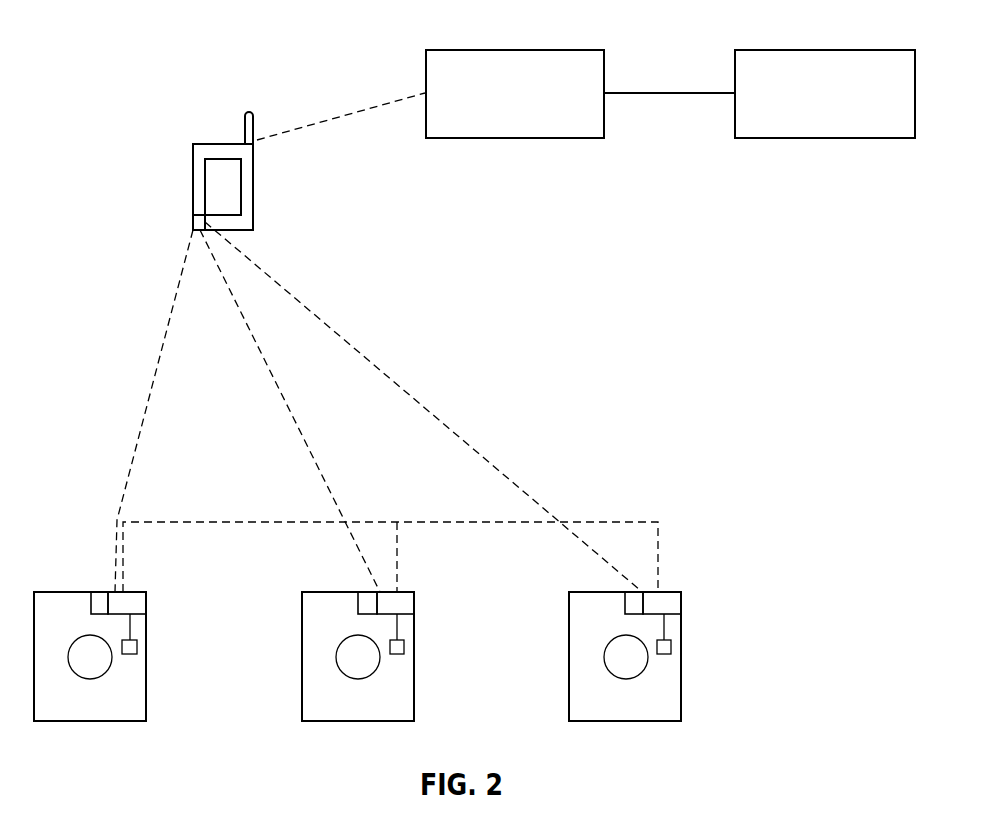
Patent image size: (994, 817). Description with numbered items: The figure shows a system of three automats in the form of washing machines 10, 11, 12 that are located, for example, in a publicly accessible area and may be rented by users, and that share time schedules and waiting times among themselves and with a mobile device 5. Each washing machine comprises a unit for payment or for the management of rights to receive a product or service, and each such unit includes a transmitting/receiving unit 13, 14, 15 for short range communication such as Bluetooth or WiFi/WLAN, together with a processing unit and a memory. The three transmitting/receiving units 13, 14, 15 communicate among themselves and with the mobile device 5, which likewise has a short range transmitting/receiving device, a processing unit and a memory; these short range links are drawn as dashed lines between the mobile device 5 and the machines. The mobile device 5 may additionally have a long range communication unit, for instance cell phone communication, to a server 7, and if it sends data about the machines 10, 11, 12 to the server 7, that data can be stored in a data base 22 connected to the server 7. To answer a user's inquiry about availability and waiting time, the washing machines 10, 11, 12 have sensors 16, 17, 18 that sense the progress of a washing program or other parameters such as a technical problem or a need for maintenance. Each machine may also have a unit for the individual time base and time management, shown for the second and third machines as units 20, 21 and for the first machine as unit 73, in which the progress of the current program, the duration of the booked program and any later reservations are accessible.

The mobile device 5 is at (250, 213).
The server 7 is at (467, 48).
The data base 22 is at (843, 50).
The washing machine 10 is at (85, 722).
The washing machine 11 is at (352, 722).
The washing machine 12 is at (620, 722).
The transmitting/receiving unit 13 is at (146, 605).
The transmitting/receiving unit 14 is at (414, 605).
The transmitting/receiving unit 15 is at (681, 605).
The sensor 16 is at (137, 648).
The sensor 17 is at (404, 648).
The sensor 18 is at (671, 648).
The control unit of first appliance 73 is at (103, 590).
The unit for the individual time base and time management 20 is at (368, 590).
The unit for the individual time base and time management 21 is at (632, 590).